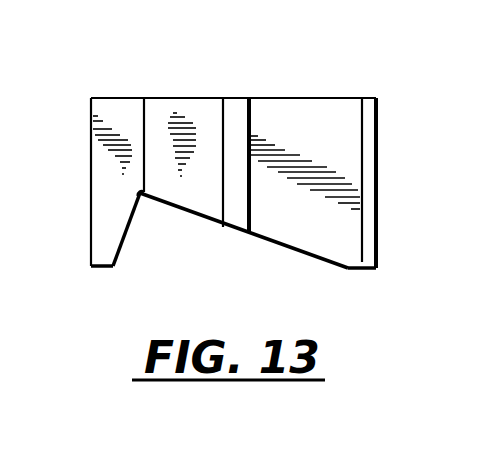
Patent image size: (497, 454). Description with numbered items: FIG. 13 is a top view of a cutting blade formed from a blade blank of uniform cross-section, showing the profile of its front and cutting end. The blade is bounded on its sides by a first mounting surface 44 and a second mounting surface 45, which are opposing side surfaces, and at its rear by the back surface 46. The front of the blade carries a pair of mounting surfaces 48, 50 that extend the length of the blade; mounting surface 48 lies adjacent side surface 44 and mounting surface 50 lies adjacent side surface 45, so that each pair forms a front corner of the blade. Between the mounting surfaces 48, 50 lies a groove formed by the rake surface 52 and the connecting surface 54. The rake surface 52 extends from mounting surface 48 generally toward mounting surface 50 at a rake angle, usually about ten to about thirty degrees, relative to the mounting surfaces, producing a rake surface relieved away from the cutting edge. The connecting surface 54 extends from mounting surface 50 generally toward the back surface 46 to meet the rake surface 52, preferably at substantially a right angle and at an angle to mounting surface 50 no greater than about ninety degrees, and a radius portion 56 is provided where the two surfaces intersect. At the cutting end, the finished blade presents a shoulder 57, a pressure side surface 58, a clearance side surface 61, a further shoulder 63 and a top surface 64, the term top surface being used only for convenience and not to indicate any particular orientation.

The first mounting surface 44 is at (378, 208).
The second mounting surface 45 is at (91, 192).
The back surface 46 is at (208, 97).
The mounting surface 48 is at (366, 272).
The mounting surface 50 is at (103, 268).
The rake surface 52 is at (311, 248).
The connecting surface 54 is at (127, 233).
The radius portion 56 is at (141, 196).
The shoulder 57 is at (370, 160).
The pressure side surface 58 is at (328, 111).
The clearance side surface 61 is at (178, 110).
The shoulder 63 is at (117, 110).
The top surface 64 is at (240, 110).